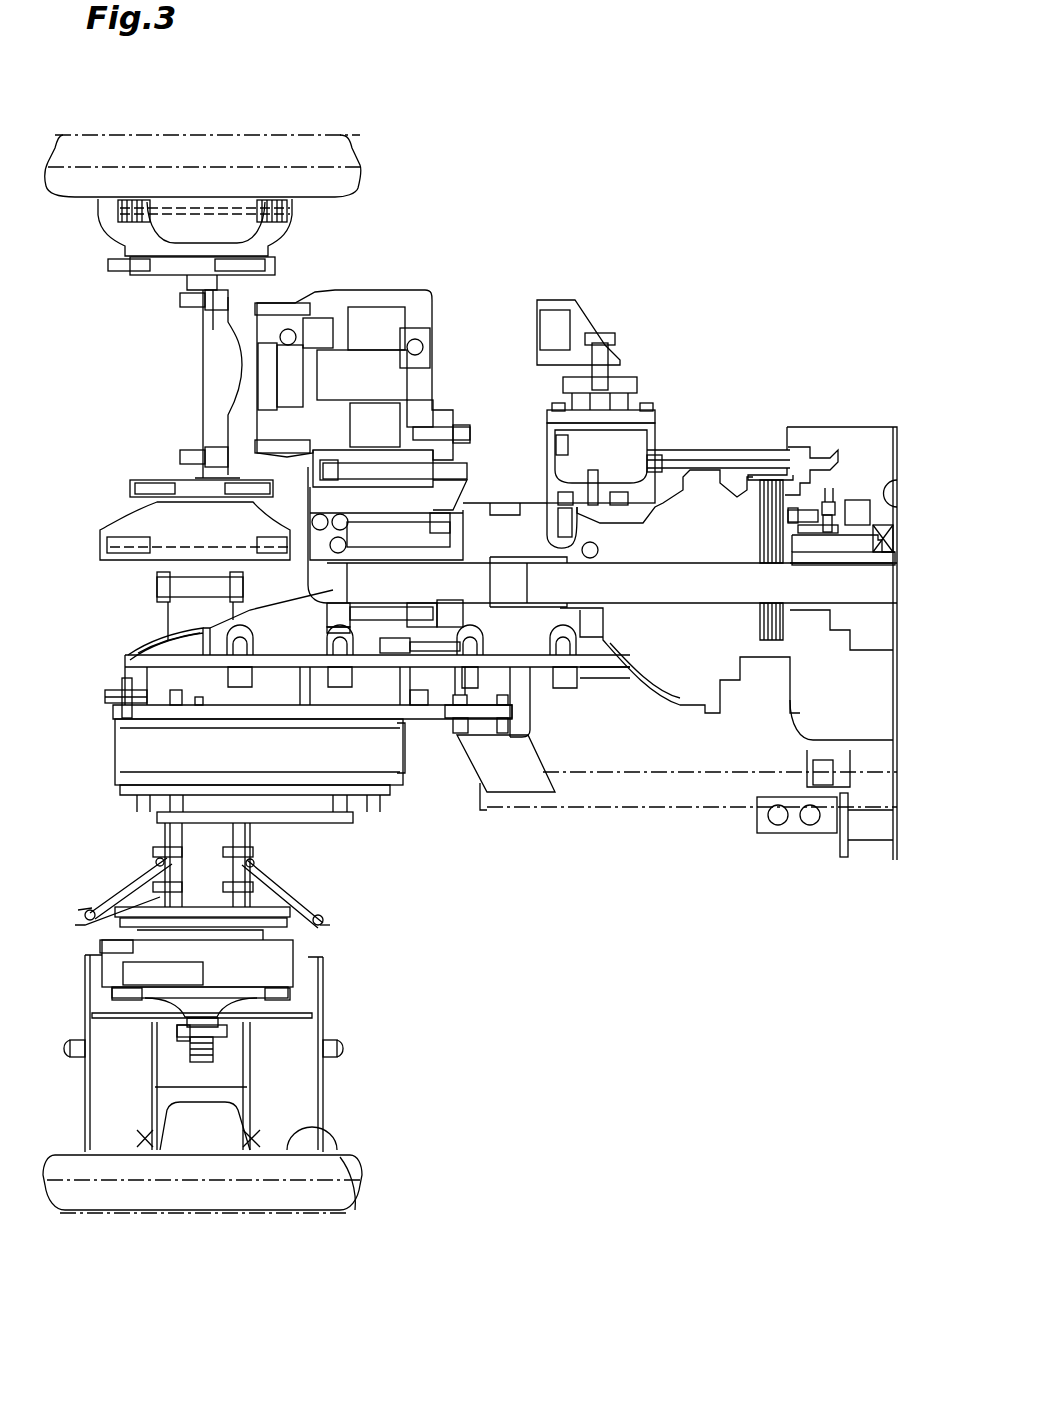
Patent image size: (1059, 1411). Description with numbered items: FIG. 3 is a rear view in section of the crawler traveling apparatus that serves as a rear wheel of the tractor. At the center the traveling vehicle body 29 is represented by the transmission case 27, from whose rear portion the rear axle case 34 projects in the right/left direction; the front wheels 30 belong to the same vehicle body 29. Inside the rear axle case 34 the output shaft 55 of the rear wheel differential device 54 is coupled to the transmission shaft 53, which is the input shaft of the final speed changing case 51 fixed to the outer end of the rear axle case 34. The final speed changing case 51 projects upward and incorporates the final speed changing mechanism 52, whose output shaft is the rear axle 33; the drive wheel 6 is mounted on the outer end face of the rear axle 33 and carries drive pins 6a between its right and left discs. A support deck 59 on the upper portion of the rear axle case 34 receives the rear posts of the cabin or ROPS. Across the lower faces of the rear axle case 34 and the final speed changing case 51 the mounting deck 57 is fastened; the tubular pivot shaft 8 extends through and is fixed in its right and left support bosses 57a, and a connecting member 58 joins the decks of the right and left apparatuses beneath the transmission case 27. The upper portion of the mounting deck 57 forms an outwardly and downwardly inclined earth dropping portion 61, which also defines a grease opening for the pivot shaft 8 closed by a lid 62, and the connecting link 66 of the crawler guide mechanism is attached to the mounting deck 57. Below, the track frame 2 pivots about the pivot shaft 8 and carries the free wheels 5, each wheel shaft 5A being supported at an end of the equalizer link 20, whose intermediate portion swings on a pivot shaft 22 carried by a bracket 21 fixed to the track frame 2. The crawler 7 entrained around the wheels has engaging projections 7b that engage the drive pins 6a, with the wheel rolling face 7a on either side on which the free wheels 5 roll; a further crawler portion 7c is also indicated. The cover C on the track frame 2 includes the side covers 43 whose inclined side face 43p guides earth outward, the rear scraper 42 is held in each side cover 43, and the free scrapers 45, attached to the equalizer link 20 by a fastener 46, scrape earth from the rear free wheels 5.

The track frame 2 is at (160, 833).
The free wheels 5 is at (243, 1147).
The wheel shaft 5A is at (75, 1050).
The drive wheel 6 is at (113, 295).
The drive pin 6a is at (177, 220).
The crawler 7 is at (365, 1180).
The wheel rolling face 7a is at (342, 1160).
The engaging projections 7b is at (225, 1113).
The tire 7c is at (260, 1215).
The pivot shaft 8 is at (143, 777).
The equalizer link 20 is at (220, 1000).
The bracket 21 is at (277, 997).
The pivot shaft 22 is at (277, 967).
The transmission case 27 is at (808, 732).
The traveling vehicle body 29 is at (797, 350).
The front wheels 30 is at (760, 383).
The rear axle 33 is at (330, 367).
The rear axle case 34 is at (635, 697).
The rear scraper 42 is at (120, 882).
The side covers 43 is at (80, 925).
The inclined side face 43p is at (277, 885).
The free scrapers 45 is at (113, 1007).
The fastener 46 is at (180, 1033).
The final speed changing case 51 is at (400, 285).
The final speed changing mechanism 52 is at (412, 320).
The transmission shaft 53 is at (463, 577).
The rear wheel differential device 54 is at (858, 513).
The output shaft 55 is at (667, 573).
The mounting deck 57 is at (117, 668).
The support bosses 57a is at (137, 712).
The connecting member 58 is at (580, 790).
The support deck 59 is at (602, 317).
The earth dropping portion 61 is at (123, 648).
The lid 62 is at (160, 643).
The connecting link 66 is at (195, 585).
The cover C is at (277, 875).